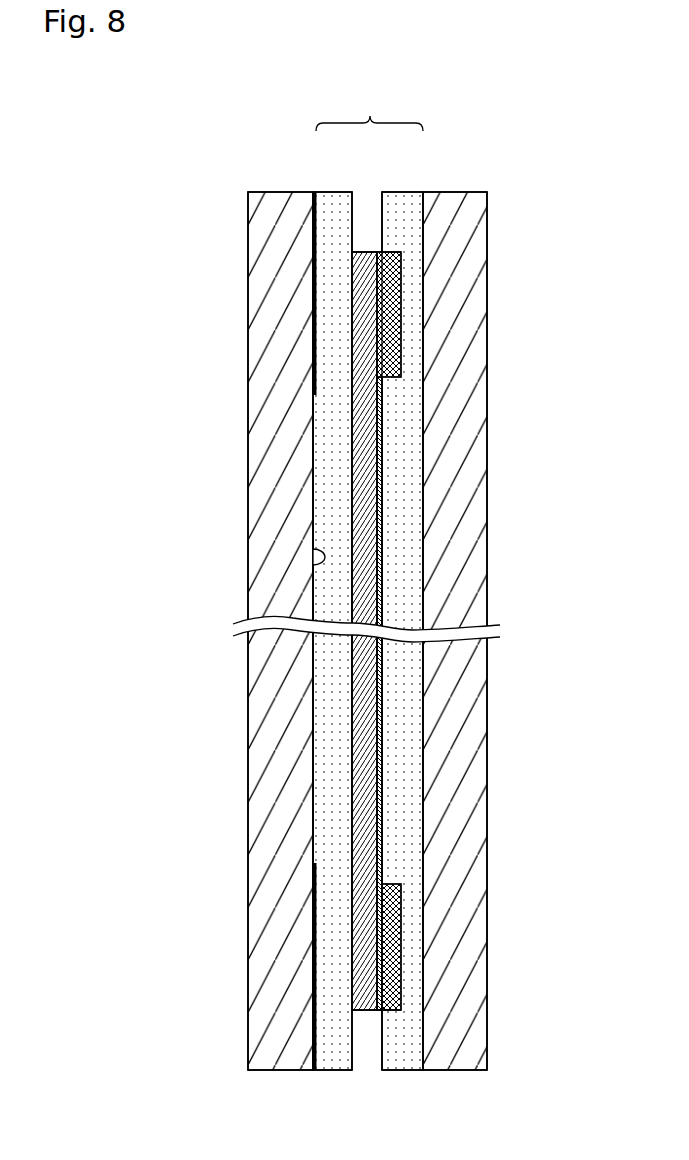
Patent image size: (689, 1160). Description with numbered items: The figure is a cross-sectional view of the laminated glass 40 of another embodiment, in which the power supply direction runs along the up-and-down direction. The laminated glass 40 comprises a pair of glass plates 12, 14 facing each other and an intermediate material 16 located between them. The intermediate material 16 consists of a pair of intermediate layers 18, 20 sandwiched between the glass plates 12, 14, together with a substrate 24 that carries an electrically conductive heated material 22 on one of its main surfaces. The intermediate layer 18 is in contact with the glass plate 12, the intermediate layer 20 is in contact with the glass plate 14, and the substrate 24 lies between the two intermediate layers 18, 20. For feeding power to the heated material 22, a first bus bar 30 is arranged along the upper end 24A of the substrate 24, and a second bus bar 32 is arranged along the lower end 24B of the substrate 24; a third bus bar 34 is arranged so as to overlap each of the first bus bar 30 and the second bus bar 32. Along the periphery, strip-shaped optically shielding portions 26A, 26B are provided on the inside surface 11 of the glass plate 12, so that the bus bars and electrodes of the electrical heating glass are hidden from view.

The laminated glass 40 is at (488, 162).
The intermediate material 16 is at (369, 110).
The glass plate 12 is at (248, 732).
The glass plate 14 is at (487, 403).
The intermediate layer 18 is at (327, 460).
The intermediate layer 20 is at (407, 603).
The electrically conductive heated material 22 is at (382, 763).
The substrate 24 is at (365, 507).
The upper end of the substrate 24A is at (372, 252).
The lower end of the substrate 24B is at (362, 1012).
The optically shielding portion 26A is at (314, 242).
The optically shielding portion 26B is at (312, 981).
The first bus bar 30 is at (377, 316).
The second bus bar 32 is at (377, 943).
The third bus bar 34 is at (400, 295).
The inside surface of the glass plate 11 is at (322, 565).